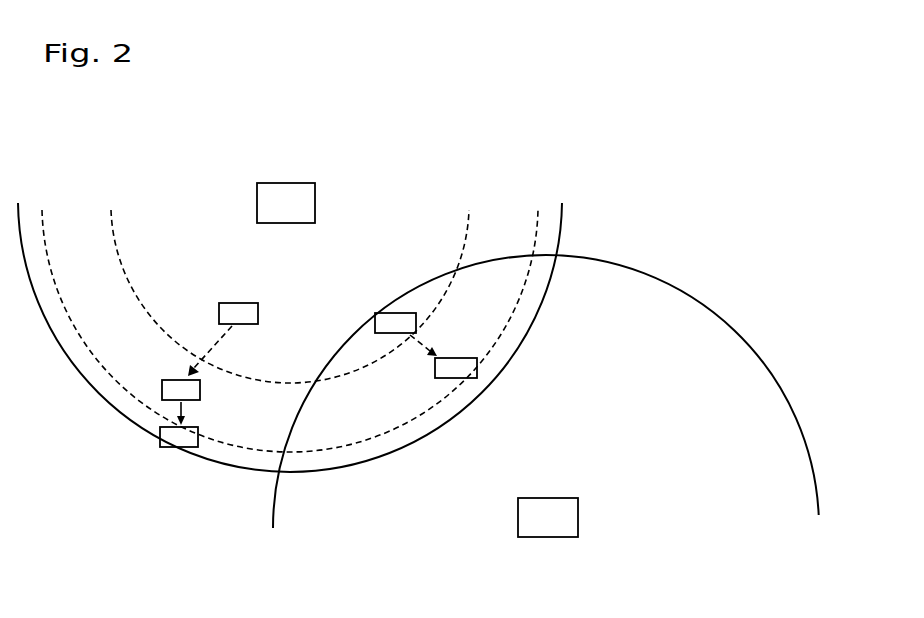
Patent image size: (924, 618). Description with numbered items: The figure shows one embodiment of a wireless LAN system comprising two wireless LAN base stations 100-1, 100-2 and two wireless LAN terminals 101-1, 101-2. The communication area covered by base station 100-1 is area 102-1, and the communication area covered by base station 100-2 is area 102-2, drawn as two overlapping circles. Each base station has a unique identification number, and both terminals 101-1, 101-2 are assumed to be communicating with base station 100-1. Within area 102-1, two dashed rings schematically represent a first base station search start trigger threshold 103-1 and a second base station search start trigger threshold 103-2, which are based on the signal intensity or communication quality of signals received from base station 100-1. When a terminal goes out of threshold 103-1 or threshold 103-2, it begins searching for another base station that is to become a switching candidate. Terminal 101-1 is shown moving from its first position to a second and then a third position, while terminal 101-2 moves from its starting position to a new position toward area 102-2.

The base station 100-1 is at (292, 183).
The base station 100-2 is at (558, 498).
The terminal 101-1 is at (238, 303).
The terminal 101-2 is at (386, 313).
The area 102-1 is at (562, 225).
The area 102-2 is at (642, 270).
The threshold 103-1 is at (468, 230).
The threshold 103-2 is at (535, 247).